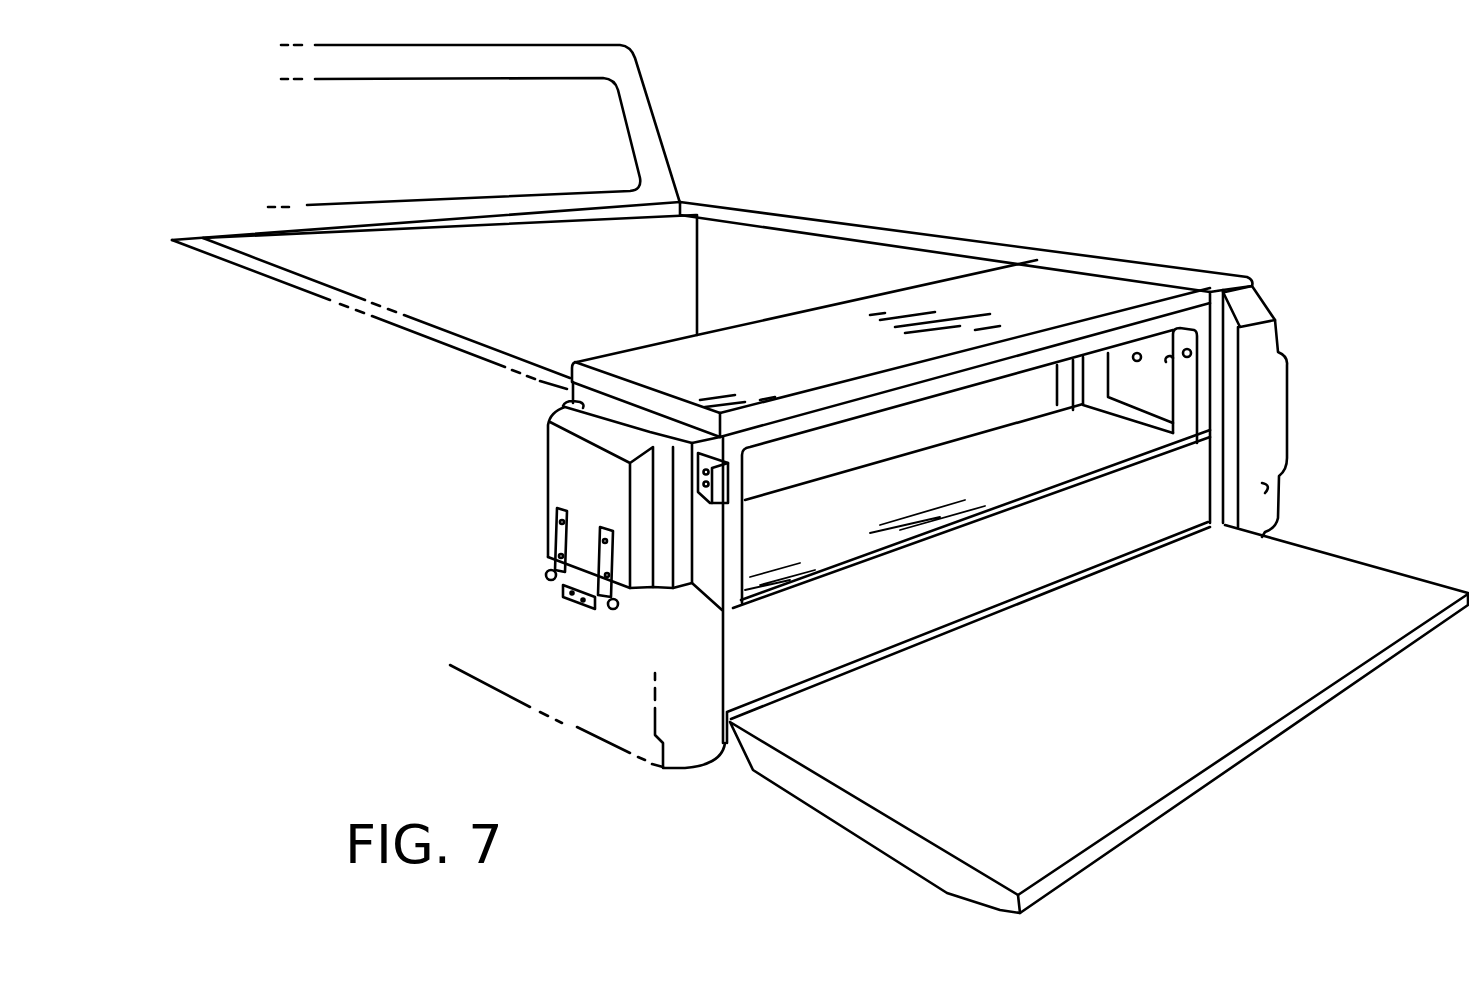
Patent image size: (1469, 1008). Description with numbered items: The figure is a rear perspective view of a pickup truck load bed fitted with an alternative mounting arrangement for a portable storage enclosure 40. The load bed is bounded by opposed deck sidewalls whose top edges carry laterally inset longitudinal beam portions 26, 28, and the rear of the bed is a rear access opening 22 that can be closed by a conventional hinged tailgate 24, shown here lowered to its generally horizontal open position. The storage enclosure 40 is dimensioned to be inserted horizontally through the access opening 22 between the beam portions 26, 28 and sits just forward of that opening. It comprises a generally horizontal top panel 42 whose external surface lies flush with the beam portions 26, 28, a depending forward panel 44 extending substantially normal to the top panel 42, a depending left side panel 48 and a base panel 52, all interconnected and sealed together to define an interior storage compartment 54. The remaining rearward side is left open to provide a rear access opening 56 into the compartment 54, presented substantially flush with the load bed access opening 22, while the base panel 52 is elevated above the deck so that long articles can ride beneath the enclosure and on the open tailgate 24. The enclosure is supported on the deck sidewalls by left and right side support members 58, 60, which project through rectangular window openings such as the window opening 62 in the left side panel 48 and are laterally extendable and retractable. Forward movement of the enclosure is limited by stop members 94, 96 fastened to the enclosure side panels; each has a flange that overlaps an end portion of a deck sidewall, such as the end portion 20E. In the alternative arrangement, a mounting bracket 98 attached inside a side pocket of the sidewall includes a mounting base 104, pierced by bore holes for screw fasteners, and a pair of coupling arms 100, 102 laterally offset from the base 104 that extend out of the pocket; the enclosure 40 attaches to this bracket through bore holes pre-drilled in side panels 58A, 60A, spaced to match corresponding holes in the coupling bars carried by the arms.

The end portion of load deck sidewall 20E is at (1218, 387).
The rear access opening 22 is at (1103, 510).
The tailgate 24 is at (1213, 772).
The longitudinal beam portion 26 is at (440, 332).
The longitudinal beam portion 28 is at (950, 240).
The storage enclosure 40 is at (891, 465).
The top panel 42 is at (793, 340).
The depending forward panel 44 is at (783, 487).
The depending left side panel 48 is at (607, 405).
The base panel 52 is at (997, 497).
The interior storage compartment 54 is at (993, 470).
The rear access opening 56 is at (1143, 397).
The left side support member 58 is at (591, 508).
The side panel 58A is at (580, 490).
The right side support member 60 is at (1120, 423).
The side panel 60A is at (1130, 378).
The rectangular window opening 62 is at (673, 393).
The stop member 94 is at (723, 495).
The stop member 96 is at (1218, 348).
The mounting bracket 98 is at (567, 575).
The coupling arm 100 is at (620, 608).
The coupling arm 102 is at (546, 577).
The mounting base 104 is at (583, 604).